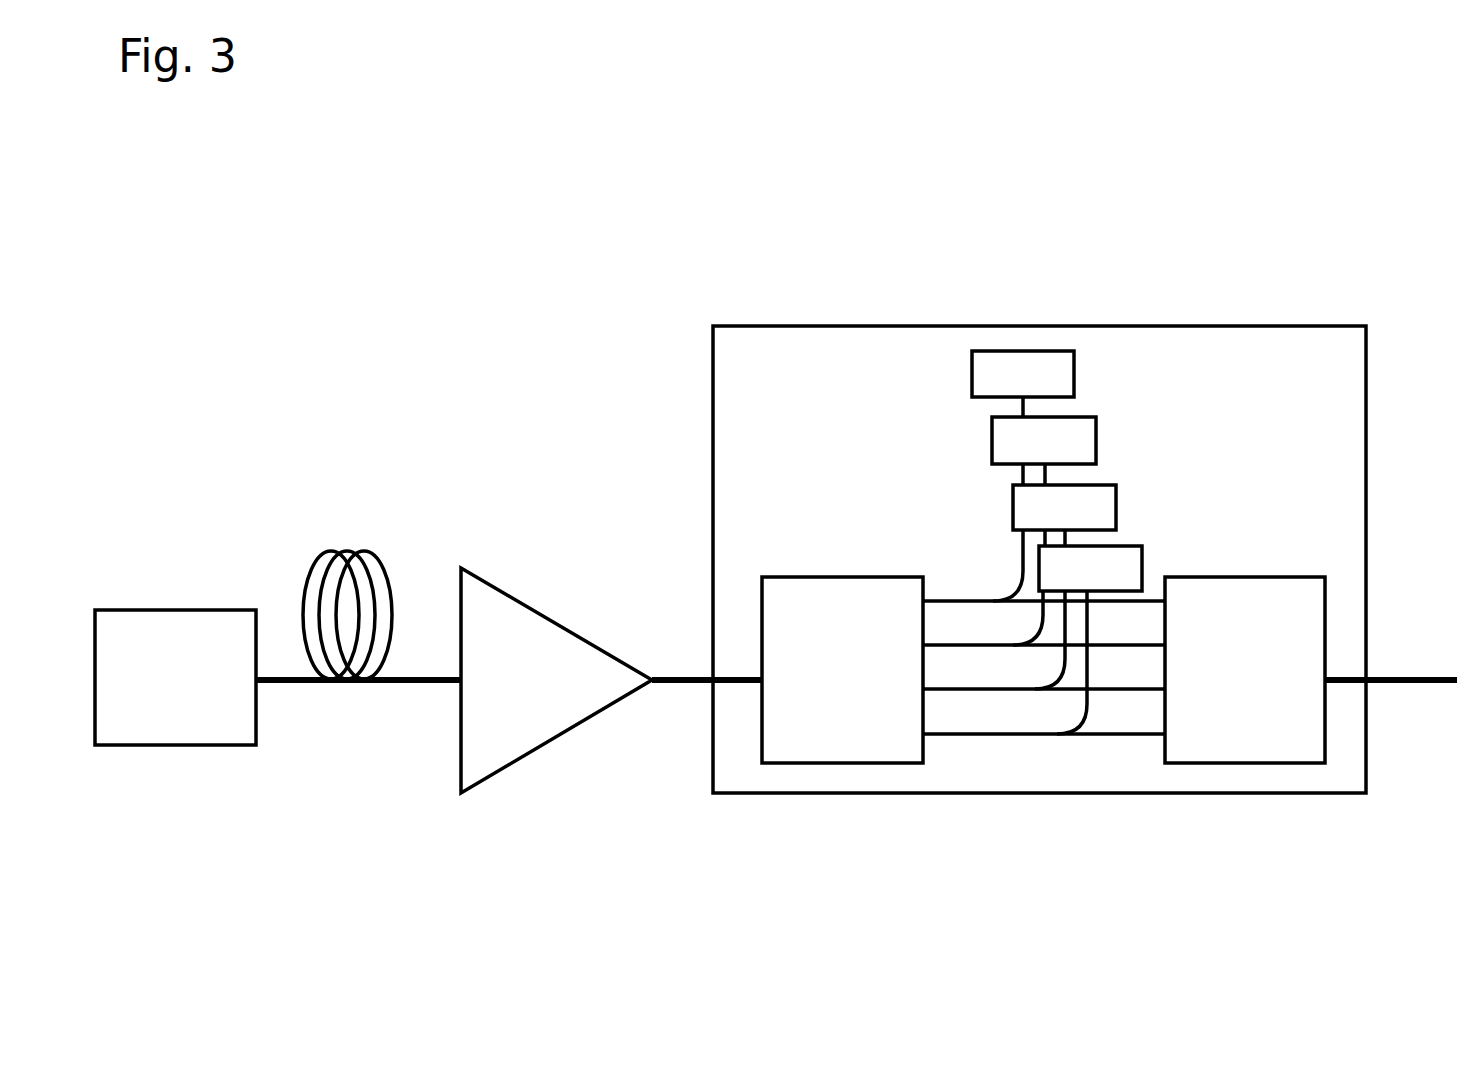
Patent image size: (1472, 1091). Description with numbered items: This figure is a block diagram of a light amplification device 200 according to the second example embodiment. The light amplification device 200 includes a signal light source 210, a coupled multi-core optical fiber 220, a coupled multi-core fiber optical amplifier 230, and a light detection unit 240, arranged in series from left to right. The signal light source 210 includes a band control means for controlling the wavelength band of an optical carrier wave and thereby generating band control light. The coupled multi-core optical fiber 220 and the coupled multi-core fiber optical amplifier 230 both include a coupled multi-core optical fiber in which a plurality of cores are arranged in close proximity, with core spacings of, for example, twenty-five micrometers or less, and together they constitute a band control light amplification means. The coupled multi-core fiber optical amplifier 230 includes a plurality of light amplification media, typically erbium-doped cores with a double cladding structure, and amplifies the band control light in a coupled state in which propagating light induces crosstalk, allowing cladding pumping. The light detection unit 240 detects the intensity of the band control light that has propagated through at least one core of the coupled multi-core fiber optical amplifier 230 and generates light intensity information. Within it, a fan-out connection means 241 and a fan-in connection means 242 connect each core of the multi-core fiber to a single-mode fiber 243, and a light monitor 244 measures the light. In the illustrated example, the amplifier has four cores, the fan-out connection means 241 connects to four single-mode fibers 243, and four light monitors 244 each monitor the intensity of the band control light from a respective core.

The light amplification device 200 is at (731, 165).
The signal light source 210 is at (168, 610).
The coupled multi-core optical fiber 220 is at (376, 555).
The coupled multi-core fiber optical amplifier 230 is at (533, 610).
The light detection unit 240 is at (833, 326).
The fan-out connection means 241 is at (838, 763).
The fan-in connection means 242 is at (1252, 763).
The single-mode fiber 243 is at (945, 600).
The light monitor 244 is at (1074, 374).